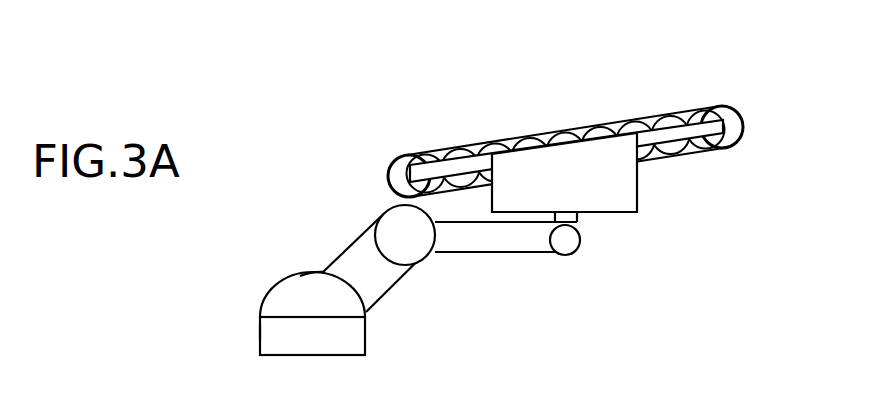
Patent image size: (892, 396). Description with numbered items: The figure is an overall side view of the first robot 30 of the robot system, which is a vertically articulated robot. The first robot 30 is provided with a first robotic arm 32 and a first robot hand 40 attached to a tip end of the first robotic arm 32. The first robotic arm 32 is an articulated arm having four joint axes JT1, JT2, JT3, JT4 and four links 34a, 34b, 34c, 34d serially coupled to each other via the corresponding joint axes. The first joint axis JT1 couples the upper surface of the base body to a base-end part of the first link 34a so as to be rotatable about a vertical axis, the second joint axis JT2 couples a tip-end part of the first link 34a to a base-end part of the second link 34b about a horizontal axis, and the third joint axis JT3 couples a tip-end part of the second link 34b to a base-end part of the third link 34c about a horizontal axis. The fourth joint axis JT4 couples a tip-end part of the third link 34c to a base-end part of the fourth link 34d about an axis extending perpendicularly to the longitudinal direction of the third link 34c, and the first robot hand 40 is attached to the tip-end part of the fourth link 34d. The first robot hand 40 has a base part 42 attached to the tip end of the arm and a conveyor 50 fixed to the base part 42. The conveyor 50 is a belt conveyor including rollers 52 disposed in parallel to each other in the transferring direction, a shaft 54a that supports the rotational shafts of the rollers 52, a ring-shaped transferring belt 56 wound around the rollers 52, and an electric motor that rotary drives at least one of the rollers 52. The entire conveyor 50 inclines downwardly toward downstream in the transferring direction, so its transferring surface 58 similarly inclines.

The first robot 30 is at (268, 103).
The first robotic arm 32 is at (343, 250).
The first link 34a is at (372, 313).
The second link 34b is at (402, 274).
The third link 34c is at (480, 255).
The fourth link 34d is at (580, 225).
The first joint axis JT1 is at (260, 332).
The second joint axis JT2 is at (318, 272).
The third joint axis JT3 is at (383, 208).
The fourth joint axis JT4 is at (578, 250).
The first robot hand 40 is at (410, 123).
The base part 42 is at (640, 178).
The conveyor 50 is at (440, 107).
The rollers 52 is at (508, 136).
The shaft 54a is at (743, 142).
The transferring belt 56 is at (393, 159).
The transferring surface 58 is at (546, 120).